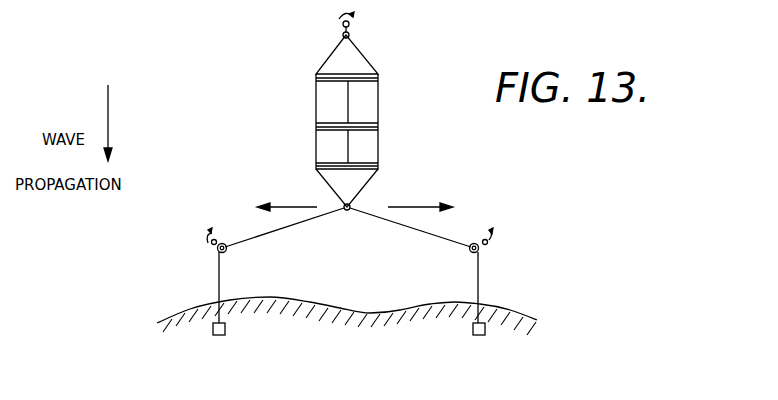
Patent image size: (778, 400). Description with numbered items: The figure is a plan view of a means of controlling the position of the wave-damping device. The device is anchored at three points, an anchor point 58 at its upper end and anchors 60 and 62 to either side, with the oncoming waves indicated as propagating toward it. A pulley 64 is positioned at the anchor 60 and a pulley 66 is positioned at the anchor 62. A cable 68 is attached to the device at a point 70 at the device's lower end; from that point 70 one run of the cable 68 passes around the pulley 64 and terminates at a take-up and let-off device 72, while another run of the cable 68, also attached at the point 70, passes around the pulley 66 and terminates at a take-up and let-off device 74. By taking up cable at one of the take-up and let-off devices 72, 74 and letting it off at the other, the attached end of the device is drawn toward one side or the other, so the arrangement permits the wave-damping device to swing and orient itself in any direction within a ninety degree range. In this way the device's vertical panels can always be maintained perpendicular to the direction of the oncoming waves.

The anchor point 58 is at (350, 25).
The anchor 60 is at (211, 247).
The anchor 62 is at (488, 246).
The pulley 64 is at (226, 254).
The pulley 66 is at (469, 251).
The cable 68 is at (270, 231).
The attachment point 70 is at (347, 211).
The take-up and let-off device 72 is at (219, 335).
The take-up and let-off device 74 is at (478, 335).